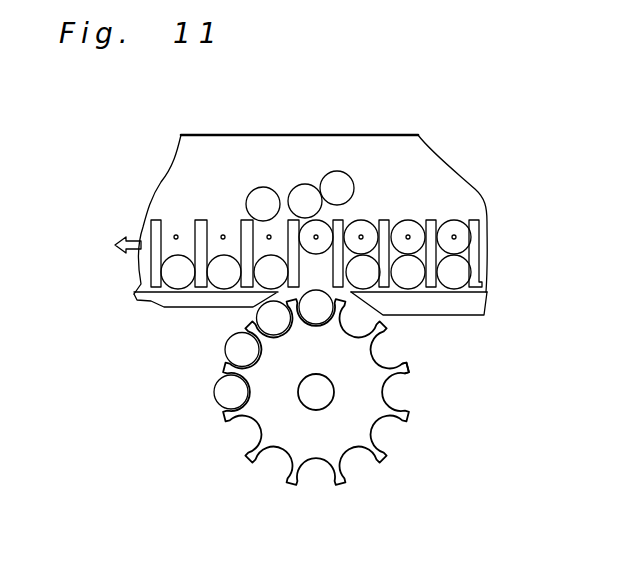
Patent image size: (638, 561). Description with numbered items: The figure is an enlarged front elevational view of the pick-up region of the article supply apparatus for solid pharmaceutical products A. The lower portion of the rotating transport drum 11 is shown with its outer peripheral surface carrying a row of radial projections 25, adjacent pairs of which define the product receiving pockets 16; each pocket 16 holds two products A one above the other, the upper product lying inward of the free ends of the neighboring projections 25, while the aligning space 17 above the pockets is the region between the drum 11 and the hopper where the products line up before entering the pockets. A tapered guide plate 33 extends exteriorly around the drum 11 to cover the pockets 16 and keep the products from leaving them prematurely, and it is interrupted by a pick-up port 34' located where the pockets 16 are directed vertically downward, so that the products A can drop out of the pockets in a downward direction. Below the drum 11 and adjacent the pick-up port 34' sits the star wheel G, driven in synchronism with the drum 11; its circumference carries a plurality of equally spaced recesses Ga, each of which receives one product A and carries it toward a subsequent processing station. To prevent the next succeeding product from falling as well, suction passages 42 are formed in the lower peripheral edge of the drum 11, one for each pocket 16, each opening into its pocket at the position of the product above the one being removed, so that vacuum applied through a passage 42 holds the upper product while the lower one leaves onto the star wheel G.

The transport drum 11 is at (368, 133).
The product receiving pockets 16 is at (232, 237).
The aligning space 17 is at (263, 168).
The radial projections 25 is at (340, 228).
The guide plate 33 is at (203, 298).
The pick-up port 34' is at (241, 357).
The suction passages 42 is at (222, 235).
The solid pharmaceutical products A is at (405, 232).
The star wheel G is at (347, 400).
The recesses Ga is at (372, 351).